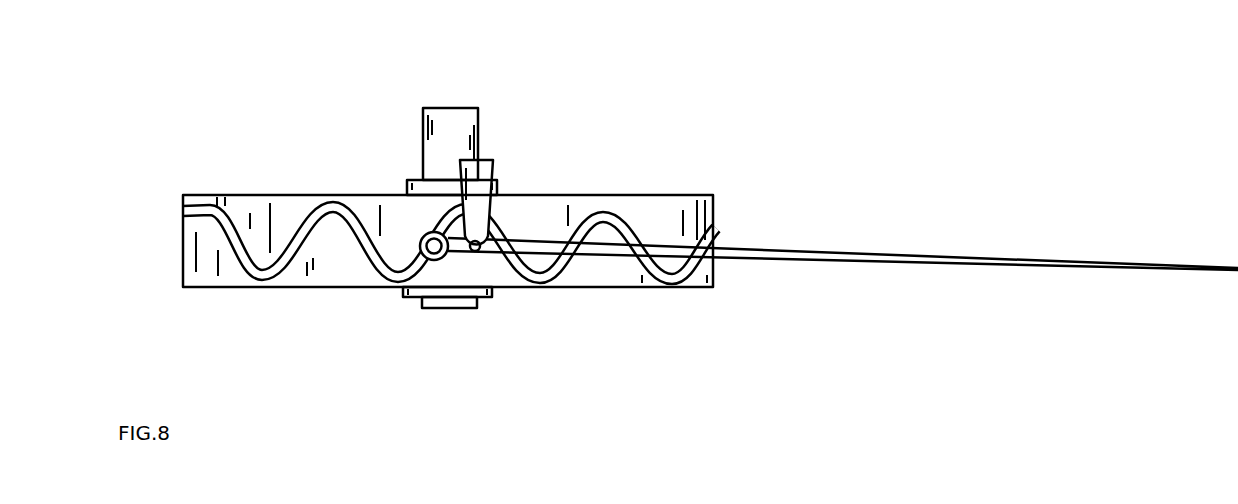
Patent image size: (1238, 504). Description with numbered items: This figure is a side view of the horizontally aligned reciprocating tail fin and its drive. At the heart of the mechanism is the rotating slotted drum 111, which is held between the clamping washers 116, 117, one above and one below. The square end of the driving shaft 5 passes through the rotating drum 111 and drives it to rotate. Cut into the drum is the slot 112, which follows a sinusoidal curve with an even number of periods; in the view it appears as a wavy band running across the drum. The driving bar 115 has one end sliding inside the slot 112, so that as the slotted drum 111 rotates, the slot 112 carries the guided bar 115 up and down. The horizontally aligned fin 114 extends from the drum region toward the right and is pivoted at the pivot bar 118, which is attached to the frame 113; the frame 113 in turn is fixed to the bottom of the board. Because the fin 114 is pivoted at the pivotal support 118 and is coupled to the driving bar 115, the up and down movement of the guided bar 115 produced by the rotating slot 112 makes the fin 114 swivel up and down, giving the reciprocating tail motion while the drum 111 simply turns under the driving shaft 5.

The driving shaft 5 is at (442, 147).
The rotating slotted drum 111 is at (372, 207).
The slot 112 is at (193, 212).
The frame 113 is at (495, 170).
The horizontally aligned fin 114 is at (623, 252).
The driving bar 115 is at (432, 260).
The clamping washer 116 is at (472, 293).
The clamping washer 117 is at (413, 180).
The pivot bar 118 is at (495, 207).